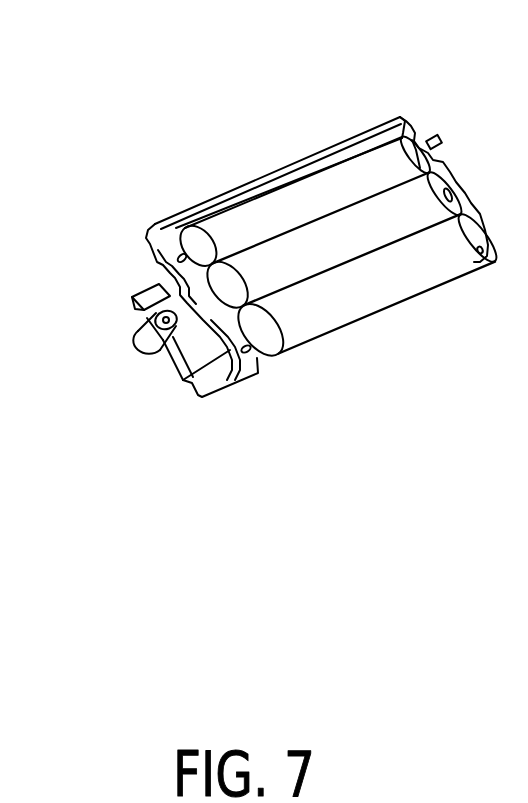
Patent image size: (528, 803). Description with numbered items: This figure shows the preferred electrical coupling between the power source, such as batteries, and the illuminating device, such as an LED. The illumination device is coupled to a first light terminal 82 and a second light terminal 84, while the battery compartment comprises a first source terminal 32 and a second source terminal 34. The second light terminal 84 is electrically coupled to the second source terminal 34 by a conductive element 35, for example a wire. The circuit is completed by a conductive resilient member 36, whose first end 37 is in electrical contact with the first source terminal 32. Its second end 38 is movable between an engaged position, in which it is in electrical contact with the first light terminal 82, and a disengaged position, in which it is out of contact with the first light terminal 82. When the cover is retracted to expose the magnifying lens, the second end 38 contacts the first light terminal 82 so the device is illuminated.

The conductive element 35 is at (258, 165).
The second source terminal 34 is at (410, 127).
The second end 38 is at (148, 240).
The conductive resilient member 36 is at (145, 289).
The second light terminal 84 is at (157, 322).
The first light terminal 82 is at (168, 313).
The first source terminal 32 is at (230, 350).
The first end 37 is at (226, 385).